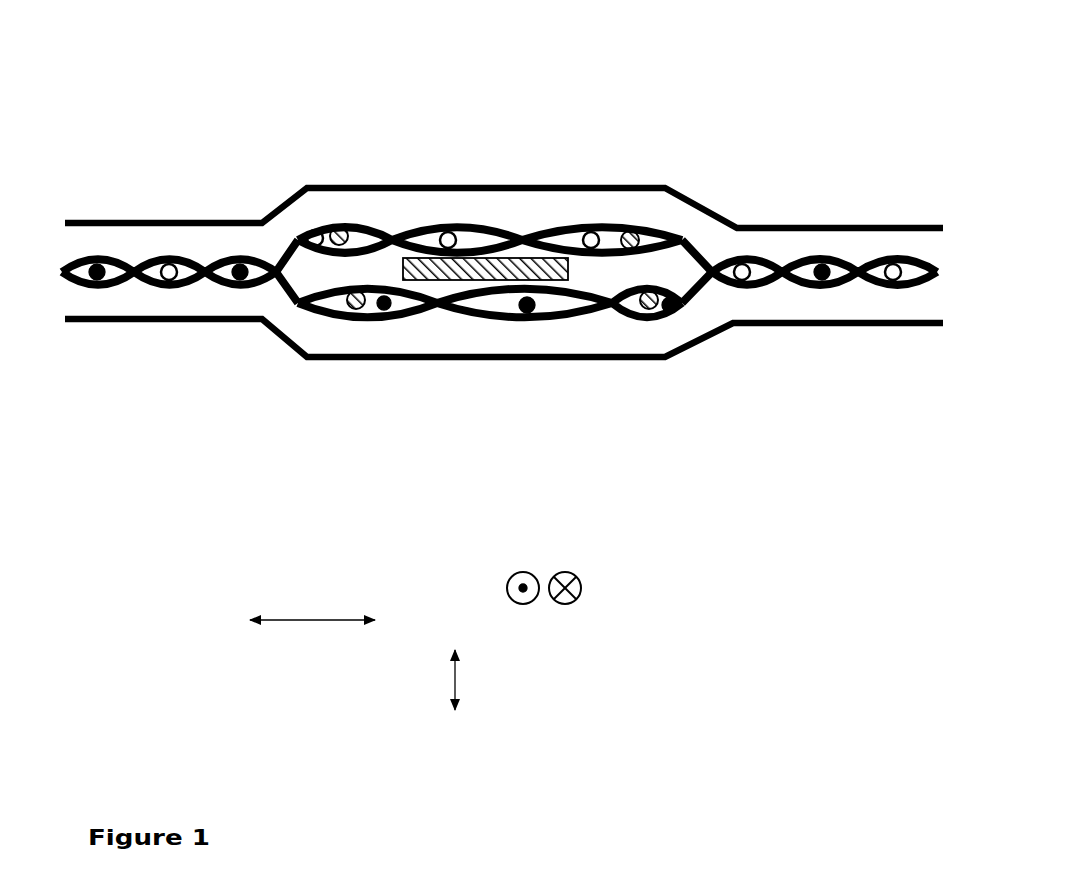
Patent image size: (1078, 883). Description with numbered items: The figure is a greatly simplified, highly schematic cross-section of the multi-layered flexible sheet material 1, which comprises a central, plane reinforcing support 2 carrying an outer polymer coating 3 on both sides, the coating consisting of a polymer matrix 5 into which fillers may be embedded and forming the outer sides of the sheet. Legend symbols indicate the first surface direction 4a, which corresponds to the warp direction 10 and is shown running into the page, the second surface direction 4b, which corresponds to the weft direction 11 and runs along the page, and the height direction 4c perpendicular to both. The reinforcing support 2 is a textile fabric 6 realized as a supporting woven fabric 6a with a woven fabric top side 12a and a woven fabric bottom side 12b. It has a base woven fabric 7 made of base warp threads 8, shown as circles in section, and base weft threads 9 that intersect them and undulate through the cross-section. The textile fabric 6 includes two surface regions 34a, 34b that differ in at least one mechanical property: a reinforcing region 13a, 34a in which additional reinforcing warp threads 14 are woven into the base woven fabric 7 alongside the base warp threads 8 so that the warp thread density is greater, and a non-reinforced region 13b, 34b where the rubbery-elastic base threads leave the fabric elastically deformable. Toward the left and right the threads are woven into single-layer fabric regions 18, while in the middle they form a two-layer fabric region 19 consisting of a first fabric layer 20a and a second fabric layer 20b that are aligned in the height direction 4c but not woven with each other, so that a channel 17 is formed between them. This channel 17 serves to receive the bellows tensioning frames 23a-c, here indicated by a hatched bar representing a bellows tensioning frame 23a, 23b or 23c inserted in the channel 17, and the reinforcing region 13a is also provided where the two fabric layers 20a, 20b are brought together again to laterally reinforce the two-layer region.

The multi-layered flexible sheet material 1 is at (118, 122).
The reinforcing support 2 is at (504, 189).
The textile fabric 6 is at (504, 189).
The supporting woven fabric 6a is at (504, 189).
The base woven fabric 7 is at (663, 238).
The polymer coating 3 is at (845, 313).
The polymer matrix 5 is at (887, 240).
The base warp threads 8 is at (315, 229).
The base weft threads 9 is at (484, 245).
The warp direction 10 is at (583, 588).
The first surface direction 4a is at (583, 588).
The weft direction 11 is at (312, 606).
The second surface direction 4b is at (312, 606).
The height direction 4c is at (471, 680).
The woven fabric top side 12a is at (583, 213).
The woven fabric bottom side 12b is at (540, 333).
The reinforcing region 13a is at (499, 272).
The first surface region 34a is at (302, 208).
The non-reinforced region 13b is at (490, 346).
The second surface region 34b is at (115, 310).
The reinforcing warp threads 14 is at (356, 290).
The channel 17 is at (345, 265).
The single-layer fabric region 18 is at (172, 237).
The two-layer fabric region 19 is at (520, 210).
The first fabric layer 20a is at (405, 232).
The second fabric layer 20b is at (405, 317).
The bellows tensioning frames 23a-c is at (485, 374).
The bellows tensioning frame 23a is at (485, 374).
The bellows tensioning frame 23b is at (485, 374).
The bellows tensioning frame 23c is at (462, 281).